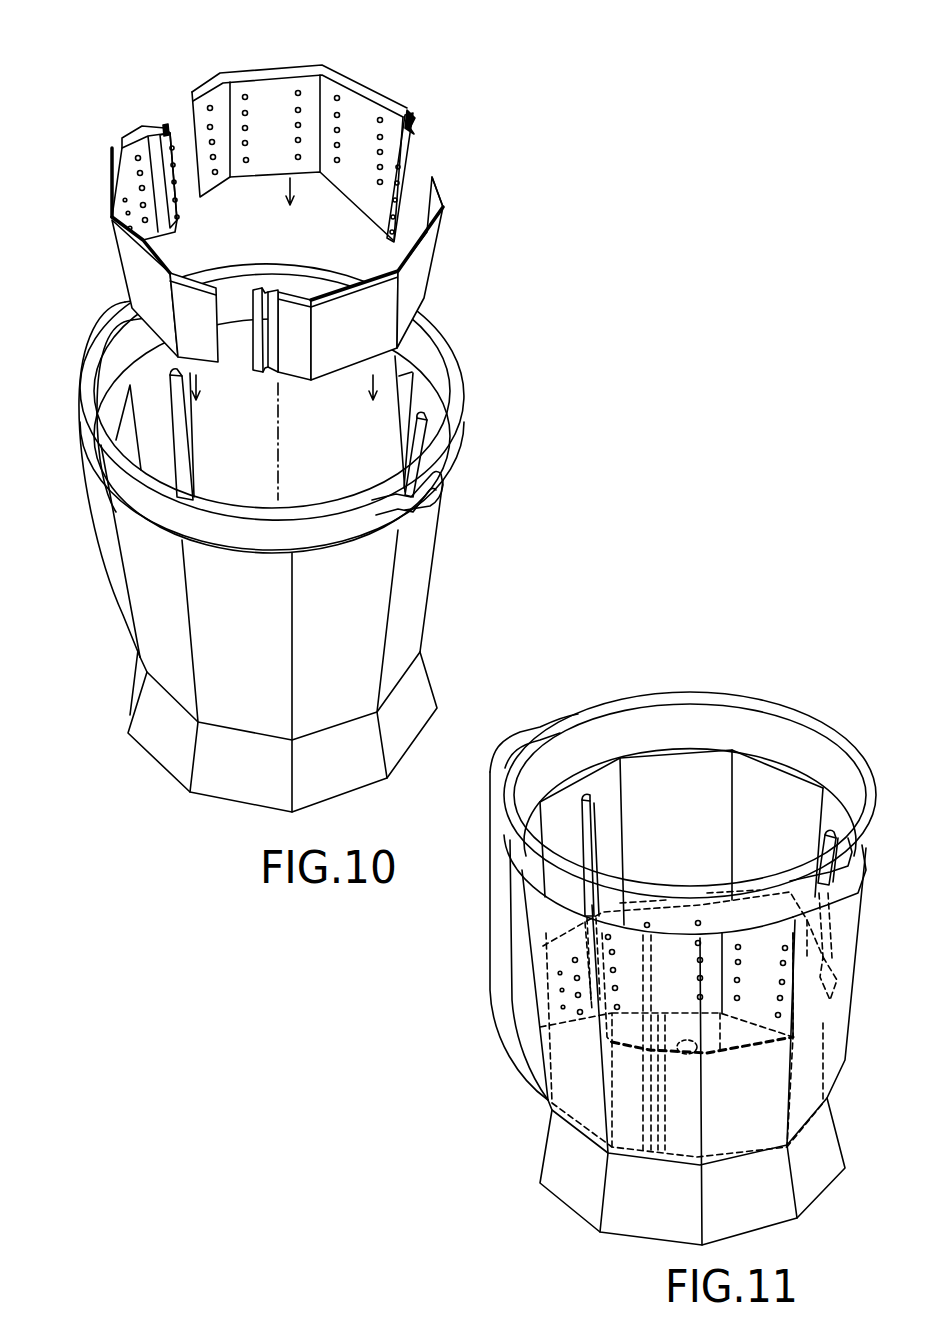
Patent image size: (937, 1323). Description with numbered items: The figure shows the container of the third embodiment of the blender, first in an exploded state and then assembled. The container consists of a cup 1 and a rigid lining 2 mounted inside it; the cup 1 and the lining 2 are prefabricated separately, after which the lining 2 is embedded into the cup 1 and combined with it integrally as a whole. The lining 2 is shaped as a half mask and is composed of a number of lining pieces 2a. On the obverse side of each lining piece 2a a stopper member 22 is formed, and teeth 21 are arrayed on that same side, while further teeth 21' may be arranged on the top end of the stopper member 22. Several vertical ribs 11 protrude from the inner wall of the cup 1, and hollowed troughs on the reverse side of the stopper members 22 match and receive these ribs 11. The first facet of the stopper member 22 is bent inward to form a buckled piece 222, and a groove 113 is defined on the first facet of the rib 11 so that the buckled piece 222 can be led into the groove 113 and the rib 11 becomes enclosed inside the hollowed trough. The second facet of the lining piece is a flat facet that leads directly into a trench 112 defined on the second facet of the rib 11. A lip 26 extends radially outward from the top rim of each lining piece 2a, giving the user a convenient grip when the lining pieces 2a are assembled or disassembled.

In FIG. 10, the cup 1 is at (428, 590).
In FIG. 11, the cup 1 is at (843, 942).
In FIG. 10, the lining 2 is at (414, 80).
In FIG. 10, the lining piece 2a is at (130, 265).
In FIG. 11, the lining piece 2a is at (572, 1078).
In FIG. 10, the vertical rib 11 is at (178, 452).
In FIG. 11, the vertical rib 11 is at (600, 810).
In FIG. 10, the teeth 21 is at (281, 101).
In FIG. 11, the teeth 21 is at (629, 969).
In FIG. 10, the teeth 21' is at (277, 183).
In FIG. 11, the teeth 21' is at (683, 994).
In FIG. 10, the stopper member 22 is at (160, 135).
In FIG. 11, the stopper member 22 is at (558, 953).
In FIG. 10, the lip 26 is at (118, 148).
In FIG. 11, the lip 26 is at (810, 970).
In FIG. 10, the trench 112 is at (176, 407).
In FIG. 11, the trench 112 is at (583, 805).
In FIG. 10, the groove 113 is at (177, 373).
In FIG. 11, the groove 113 is at (587, 800).
In FIG. 10, the buckled piece 222 is at (165, 126).